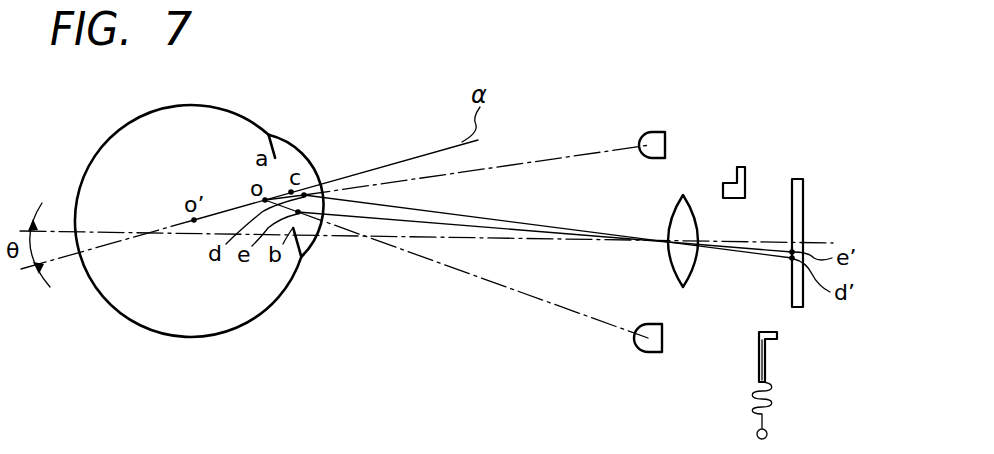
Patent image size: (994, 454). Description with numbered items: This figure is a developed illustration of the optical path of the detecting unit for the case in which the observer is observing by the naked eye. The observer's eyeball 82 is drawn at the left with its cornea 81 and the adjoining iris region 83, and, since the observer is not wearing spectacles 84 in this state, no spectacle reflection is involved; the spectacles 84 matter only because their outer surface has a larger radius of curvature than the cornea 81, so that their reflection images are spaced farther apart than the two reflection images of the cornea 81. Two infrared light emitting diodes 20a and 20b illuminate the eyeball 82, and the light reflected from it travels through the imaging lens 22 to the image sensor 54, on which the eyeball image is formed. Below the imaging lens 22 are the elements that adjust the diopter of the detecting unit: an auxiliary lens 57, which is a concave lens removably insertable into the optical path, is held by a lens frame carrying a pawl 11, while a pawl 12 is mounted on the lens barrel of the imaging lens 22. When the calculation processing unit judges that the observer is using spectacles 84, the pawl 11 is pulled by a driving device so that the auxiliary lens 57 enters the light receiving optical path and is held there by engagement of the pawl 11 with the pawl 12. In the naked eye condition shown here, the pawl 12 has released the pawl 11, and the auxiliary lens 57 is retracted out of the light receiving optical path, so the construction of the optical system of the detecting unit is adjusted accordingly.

The cornea 81 is at (297, 137).
The eyeball 82 is at (215, 320).
The iris 83 is at (266, 138).
The spectacles 84 is at (282, 170).
The infrared light emitting diode 20a is at (655, 354).
The infrared light emitting diode 20b is at (661, 131).
The imaging lens 22 is at (680, 281).
The pawl 12 is at (742, 166).
The image sensor 54 is at (805, 185).
The pawl 11 is at (778, 334).
The auxiliary lens 57 is at (767, 370).